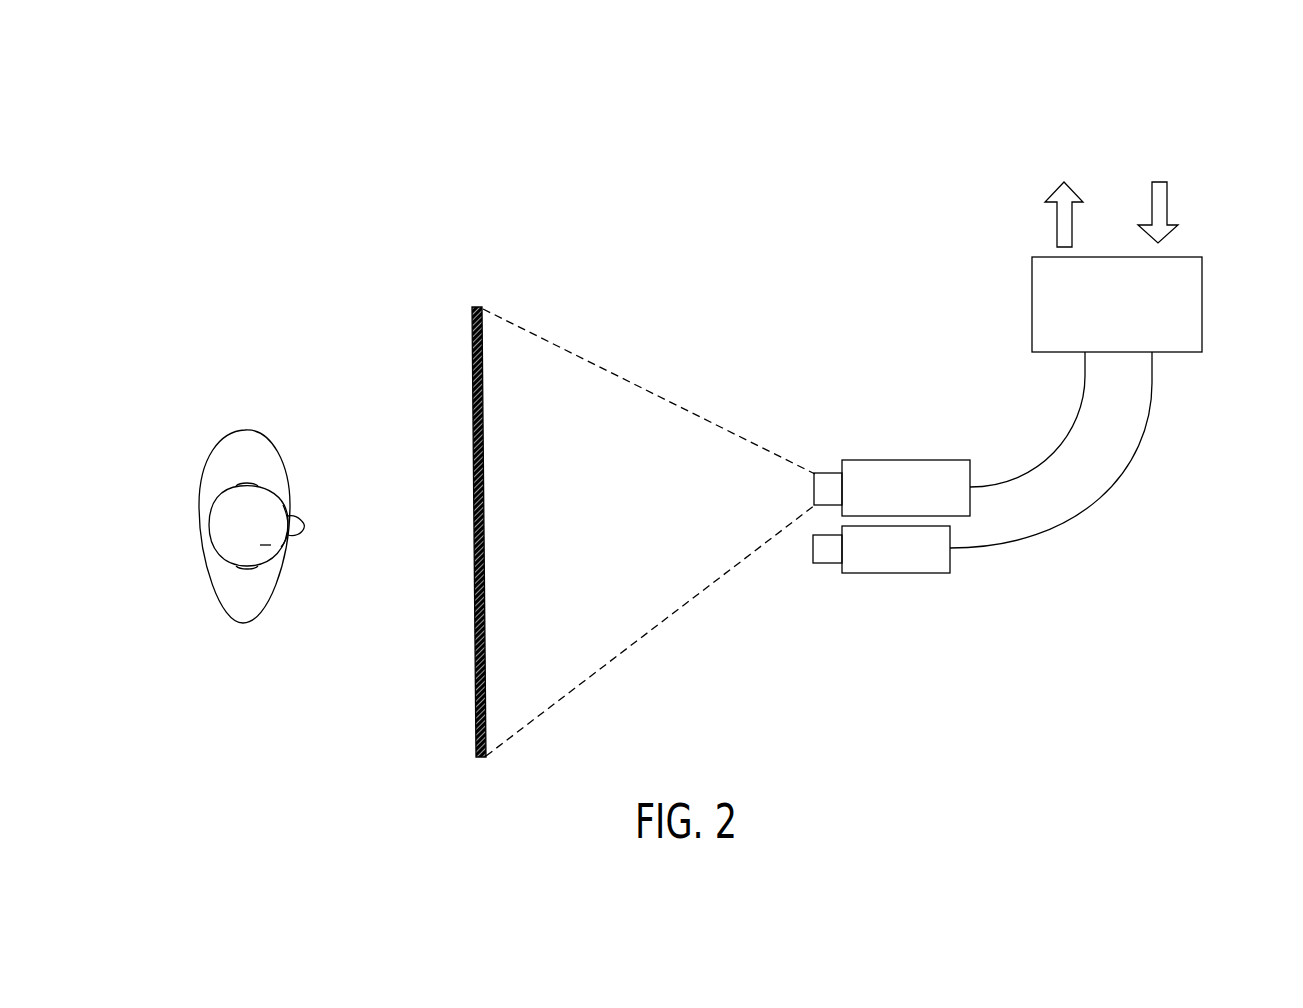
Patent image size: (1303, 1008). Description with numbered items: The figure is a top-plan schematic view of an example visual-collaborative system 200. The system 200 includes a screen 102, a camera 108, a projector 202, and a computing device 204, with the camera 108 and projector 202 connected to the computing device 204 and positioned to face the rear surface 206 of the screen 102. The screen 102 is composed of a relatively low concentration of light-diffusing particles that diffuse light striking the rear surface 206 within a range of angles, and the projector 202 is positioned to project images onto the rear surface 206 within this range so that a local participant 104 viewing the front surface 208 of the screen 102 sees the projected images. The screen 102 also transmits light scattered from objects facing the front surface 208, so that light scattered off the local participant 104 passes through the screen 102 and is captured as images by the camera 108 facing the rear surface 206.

The visual-collaborative system 200 is at (987, 93).
The local participant 104 is at (232, 623).
The screen 102 is at (474, 731).
The front surface 208 is at (444, 553).
The rear surface 206 is at (504, 553).
The projector 202 is at (905, 460).
The camera 108 is at (897, 573).
The computing device 204 is at (1180, 352).